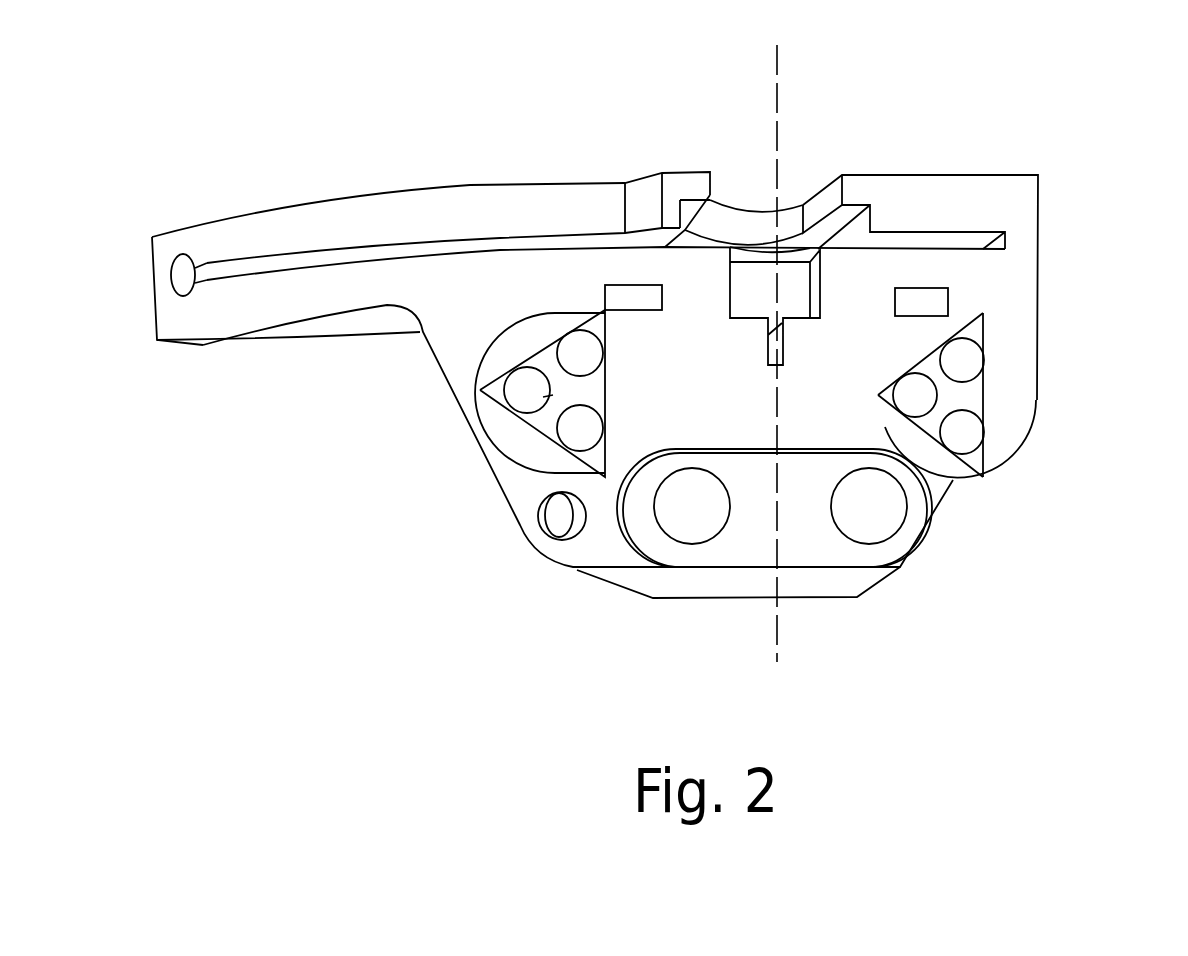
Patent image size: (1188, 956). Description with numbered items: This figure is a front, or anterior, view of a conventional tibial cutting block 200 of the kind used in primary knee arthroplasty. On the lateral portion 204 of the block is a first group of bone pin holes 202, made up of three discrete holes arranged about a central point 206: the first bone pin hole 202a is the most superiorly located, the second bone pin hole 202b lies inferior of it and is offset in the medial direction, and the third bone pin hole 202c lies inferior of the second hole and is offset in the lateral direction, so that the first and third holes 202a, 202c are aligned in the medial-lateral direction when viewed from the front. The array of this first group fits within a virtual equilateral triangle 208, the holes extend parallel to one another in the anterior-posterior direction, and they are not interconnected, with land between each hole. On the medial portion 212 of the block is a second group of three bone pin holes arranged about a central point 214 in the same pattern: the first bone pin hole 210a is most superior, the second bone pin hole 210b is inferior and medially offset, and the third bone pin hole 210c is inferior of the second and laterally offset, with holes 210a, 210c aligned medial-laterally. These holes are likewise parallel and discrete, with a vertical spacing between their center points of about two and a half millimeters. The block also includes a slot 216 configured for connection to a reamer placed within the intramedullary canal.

The tibial cutting block 200 is at (880, 173).
The first group of bone pin holes 202 is at (1016, 405).
The first bone pin hole 202a is at (950, 325).
The second bone pin hole 202b is at (900, 455).
The third bone pin hole 202c is at (987, 427).
The lateral portion 204 is at (797, 542).
The central point 206 is at (960, 380).
The virtual equilateral triangle 208 is at (987, 385).
The first bone pin hole 210a is at (560, 333).
The second bone pin hole 210b is at (487, 392).
The third bone pin hole 210c is at (587, 452).
The medial portion 212 is at (600, 537).
The central point 214 is at (510, 450).
The slot 216 is at (740, 215).